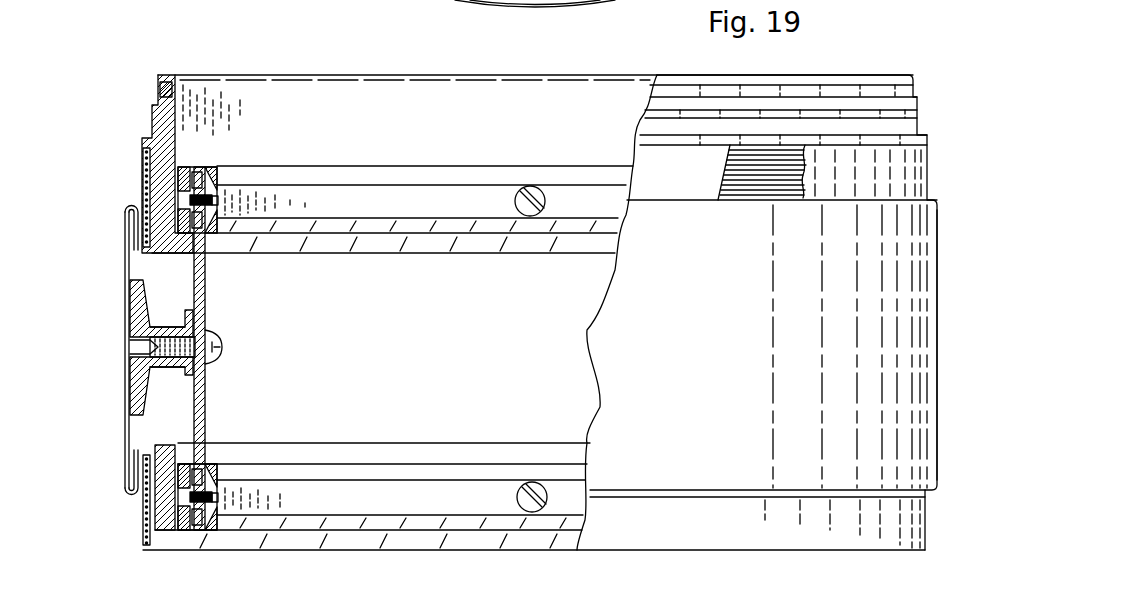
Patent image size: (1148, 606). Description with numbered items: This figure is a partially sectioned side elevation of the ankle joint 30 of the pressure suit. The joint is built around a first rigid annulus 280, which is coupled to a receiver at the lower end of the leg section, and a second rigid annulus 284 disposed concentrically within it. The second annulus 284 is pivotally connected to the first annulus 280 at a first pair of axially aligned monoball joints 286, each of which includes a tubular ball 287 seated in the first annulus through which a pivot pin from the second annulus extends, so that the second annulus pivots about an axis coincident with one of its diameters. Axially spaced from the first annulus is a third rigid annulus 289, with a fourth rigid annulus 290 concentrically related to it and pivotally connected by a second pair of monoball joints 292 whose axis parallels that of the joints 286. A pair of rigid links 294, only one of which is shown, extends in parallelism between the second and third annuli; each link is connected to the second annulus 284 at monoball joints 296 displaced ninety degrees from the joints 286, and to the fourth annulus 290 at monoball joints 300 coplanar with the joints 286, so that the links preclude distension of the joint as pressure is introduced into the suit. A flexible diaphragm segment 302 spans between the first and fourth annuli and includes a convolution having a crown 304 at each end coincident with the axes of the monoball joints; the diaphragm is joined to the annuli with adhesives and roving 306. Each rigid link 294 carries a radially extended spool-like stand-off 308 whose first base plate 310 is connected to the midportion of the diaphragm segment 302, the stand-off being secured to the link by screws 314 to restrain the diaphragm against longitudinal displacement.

The ankle joint 30 is at (945, 258).
The first rigid annulus 280 is at (240, 95).
The second rigid annulus 284 is at (390, 197).
The monoball joints 286 is at (500, 200).
The tubular ball 287 is at (492, 5).
The third rigid annulus 289 is at (262, 456).
The fourth rigid annulus 290 is at (333, 500).
The monoball joints 292 is at (502, 496).
The rigid links 294 is at (205, 306).
The monoball joints 296 is at (235, 192).
The monoball joints 300 is at (235, 485).
The flexible diaphragm segment 302 is at (125, 300).
The crown 304 is at (132, 203).
The roving 306 is at (140, 165).
The stand-off 308 is at (145, 268).
The first base plate 310 is at (155, 302).
The screws 314 is at (218, 350).